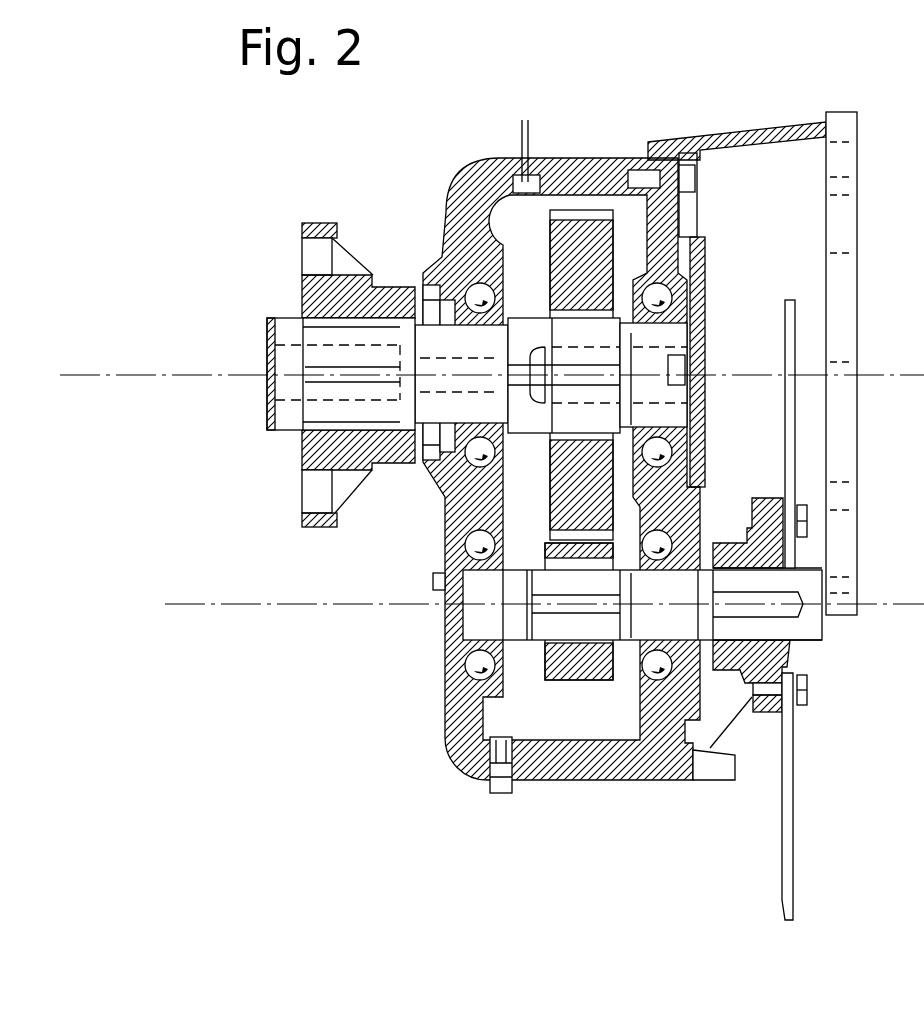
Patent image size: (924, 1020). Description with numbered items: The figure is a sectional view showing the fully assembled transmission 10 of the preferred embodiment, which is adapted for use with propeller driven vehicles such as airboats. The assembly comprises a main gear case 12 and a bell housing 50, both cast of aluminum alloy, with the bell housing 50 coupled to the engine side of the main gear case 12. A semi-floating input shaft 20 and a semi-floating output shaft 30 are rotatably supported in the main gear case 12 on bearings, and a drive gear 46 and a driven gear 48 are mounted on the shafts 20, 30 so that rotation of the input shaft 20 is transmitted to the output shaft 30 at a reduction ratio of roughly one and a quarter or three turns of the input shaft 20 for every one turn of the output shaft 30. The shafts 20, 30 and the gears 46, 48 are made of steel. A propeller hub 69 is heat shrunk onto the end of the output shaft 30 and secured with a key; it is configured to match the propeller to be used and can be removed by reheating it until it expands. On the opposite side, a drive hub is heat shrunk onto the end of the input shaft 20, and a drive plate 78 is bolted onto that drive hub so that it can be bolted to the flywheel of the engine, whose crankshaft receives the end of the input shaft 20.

The transmission 10 is at (262, 251).
The main gear case 12 is at (488, 163).
The input shaft 20 is at (798, 632).
The output shaft 30 is at (405, 400).
The drive gear 46 is at (583, 673).
The driven gear 48 is at (571, 240).
The bell housing 50 is at (700, 142).
The propeller hub 69 is at (320, 500).
The drive plate 78 is at (796, 340).